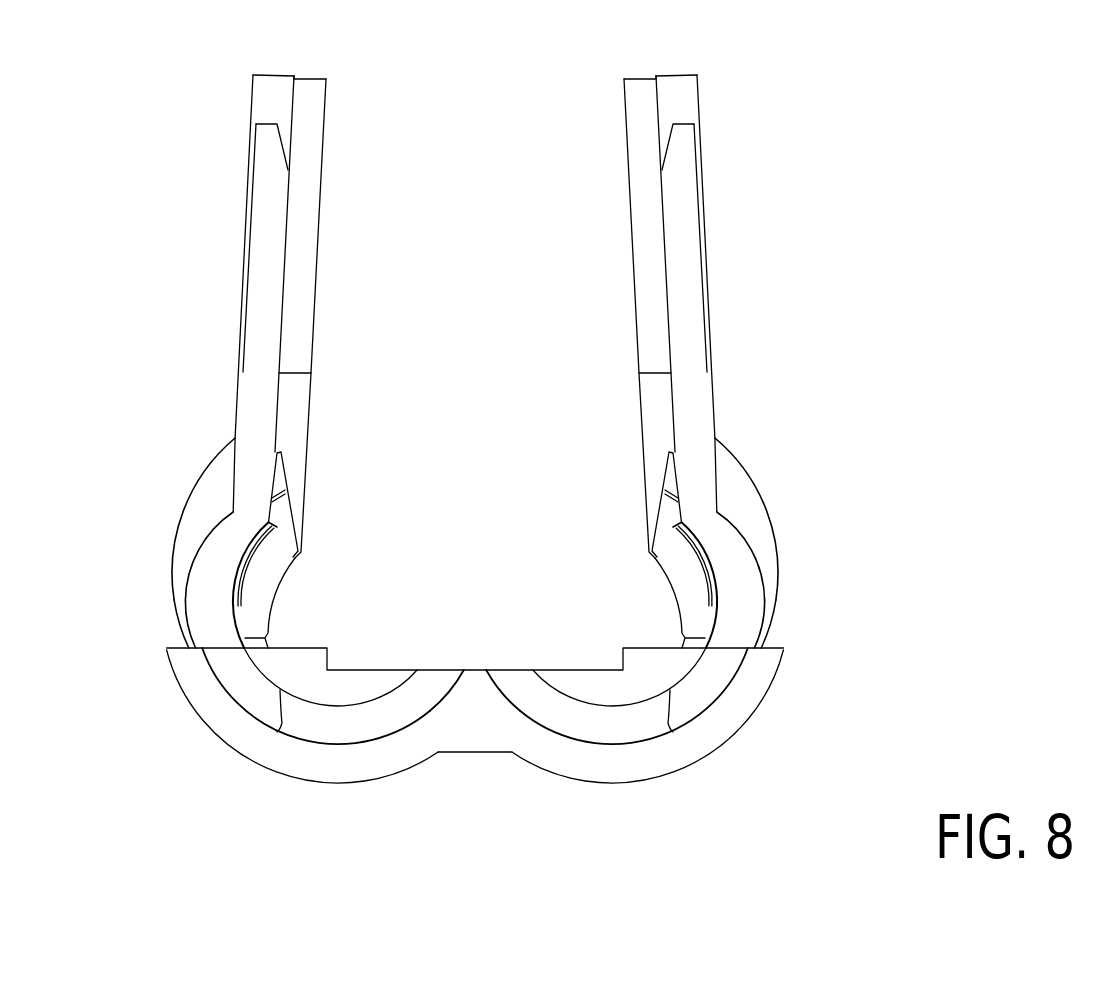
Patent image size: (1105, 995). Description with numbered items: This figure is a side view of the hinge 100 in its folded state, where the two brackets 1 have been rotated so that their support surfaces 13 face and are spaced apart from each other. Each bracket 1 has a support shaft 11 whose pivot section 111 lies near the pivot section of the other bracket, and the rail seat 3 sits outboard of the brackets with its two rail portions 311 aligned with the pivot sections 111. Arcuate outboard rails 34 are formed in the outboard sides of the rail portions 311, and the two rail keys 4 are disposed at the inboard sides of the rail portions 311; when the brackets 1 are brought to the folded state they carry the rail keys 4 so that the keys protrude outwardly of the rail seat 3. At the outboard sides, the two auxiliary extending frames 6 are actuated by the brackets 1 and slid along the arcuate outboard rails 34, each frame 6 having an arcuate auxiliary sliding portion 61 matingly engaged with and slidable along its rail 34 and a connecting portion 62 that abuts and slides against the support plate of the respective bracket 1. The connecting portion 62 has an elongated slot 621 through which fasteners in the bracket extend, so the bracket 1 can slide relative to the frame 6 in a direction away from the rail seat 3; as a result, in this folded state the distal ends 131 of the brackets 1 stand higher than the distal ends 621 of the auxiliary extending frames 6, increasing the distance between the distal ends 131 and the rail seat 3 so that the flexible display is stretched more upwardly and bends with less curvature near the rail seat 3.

The hinge 100 is at (790, 98).
The bracket 1 is at (310, 127).
The support shaft 11 is at (770, 518).
The pivot section 111 is at (183, 627).
The support surface 13 is at (315, 293).
The distal end of the bracket 131 is at (312, 88).
The rail seat 3 is at (475, 720).
The rail portion 311 is at (315, 773).
The arcuate outboard rail 34 is at (428, 692).
The rail key 4 is at (280, 515).
The auxiliary extending frame 6 is at (683, 242).
The auxiliary sliding portion 61 is at (232, 663).
The connecting portion 62 is at (267, 242).
The elongated slot 621 is at (267, 138).